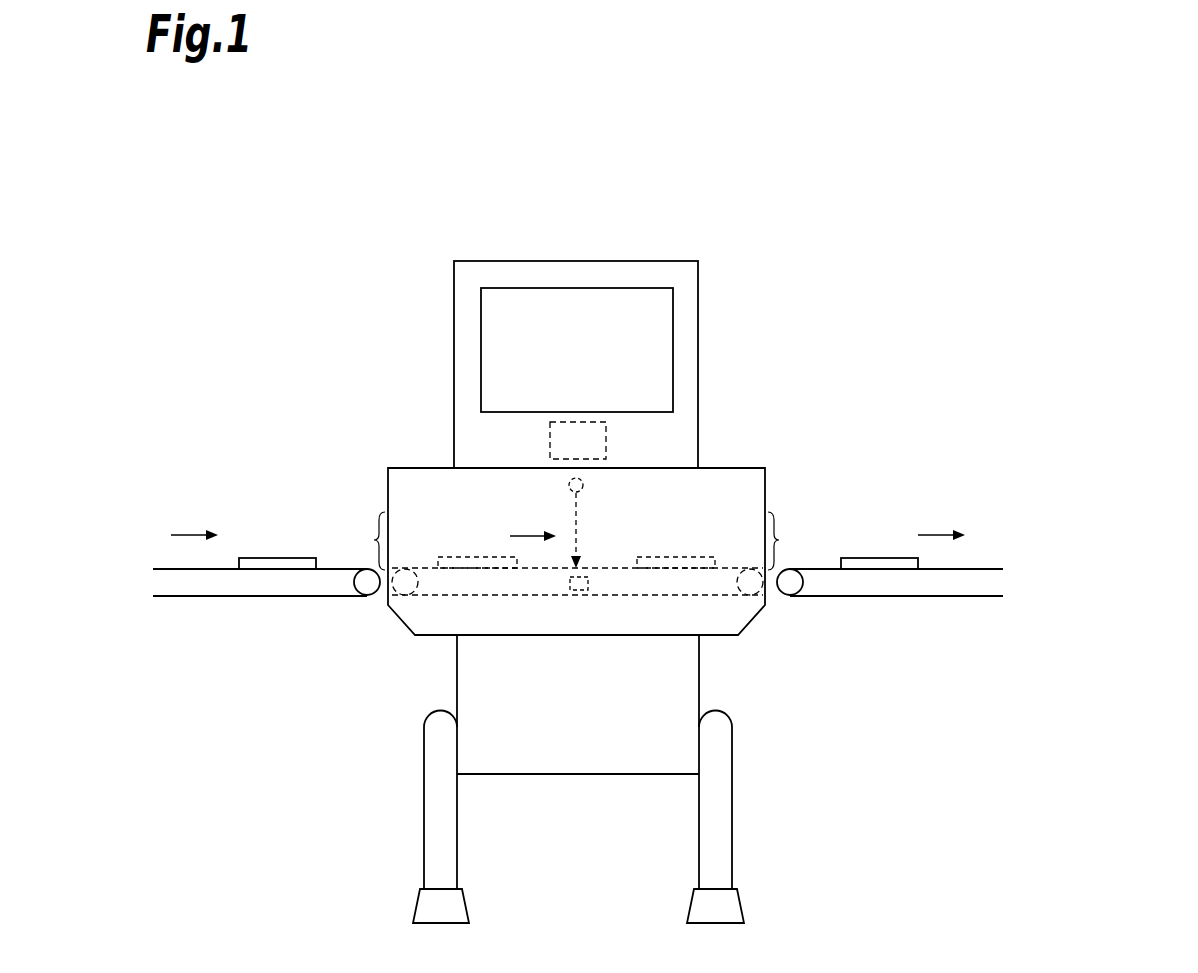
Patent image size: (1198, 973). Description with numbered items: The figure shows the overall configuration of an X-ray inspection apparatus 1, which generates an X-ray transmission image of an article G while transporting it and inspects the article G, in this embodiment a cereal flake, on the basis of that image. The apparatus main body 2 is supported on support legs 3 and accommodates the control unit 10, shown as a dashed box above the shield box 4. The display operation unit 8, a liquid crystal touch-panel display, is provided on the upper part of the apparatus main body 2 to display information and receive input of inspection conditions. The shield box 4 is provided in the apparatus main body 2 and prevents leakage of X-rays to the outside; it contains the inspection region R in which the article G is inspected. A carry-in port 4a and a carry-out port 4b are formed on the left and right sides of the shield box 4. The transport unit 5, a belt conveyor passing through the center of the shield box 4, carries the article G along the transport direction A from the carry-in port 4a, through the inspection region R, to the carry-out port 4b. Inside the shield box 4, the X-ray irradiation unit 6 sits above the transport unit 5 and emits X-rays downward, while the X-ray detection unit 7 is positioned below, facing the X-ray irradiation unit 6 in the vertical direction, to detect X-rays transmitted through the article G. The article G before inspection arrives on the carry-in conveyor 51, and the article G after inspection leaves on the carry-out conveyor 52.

The X-ray inspection apparatus 1 is at (781, 228).
The apparatus main body 2 is at (454, 316).
The support legs 3 is at (424, 815).
The shield box 4 is at (767, 487).
The carry-in port 4a is at (361, 541).
The carry-out port 4b is at (792, 541).
The transport unit 5 is at (447, 597).
The X-ray irradiation unit 6 is at (583, 482).
The X-ray detection unit 7 is at (590, 582).
The display operation unit 8 is at (673, 368).
The control unit 10 is at (550, 443).
The carry-in conveyor 51 is at (230, 597).
The carry-out conveyor 52 is at (960, 597).
The article G is at (270, 557).
The transport direction A is at (524, 536).
The inspection region R is at (622, 528).